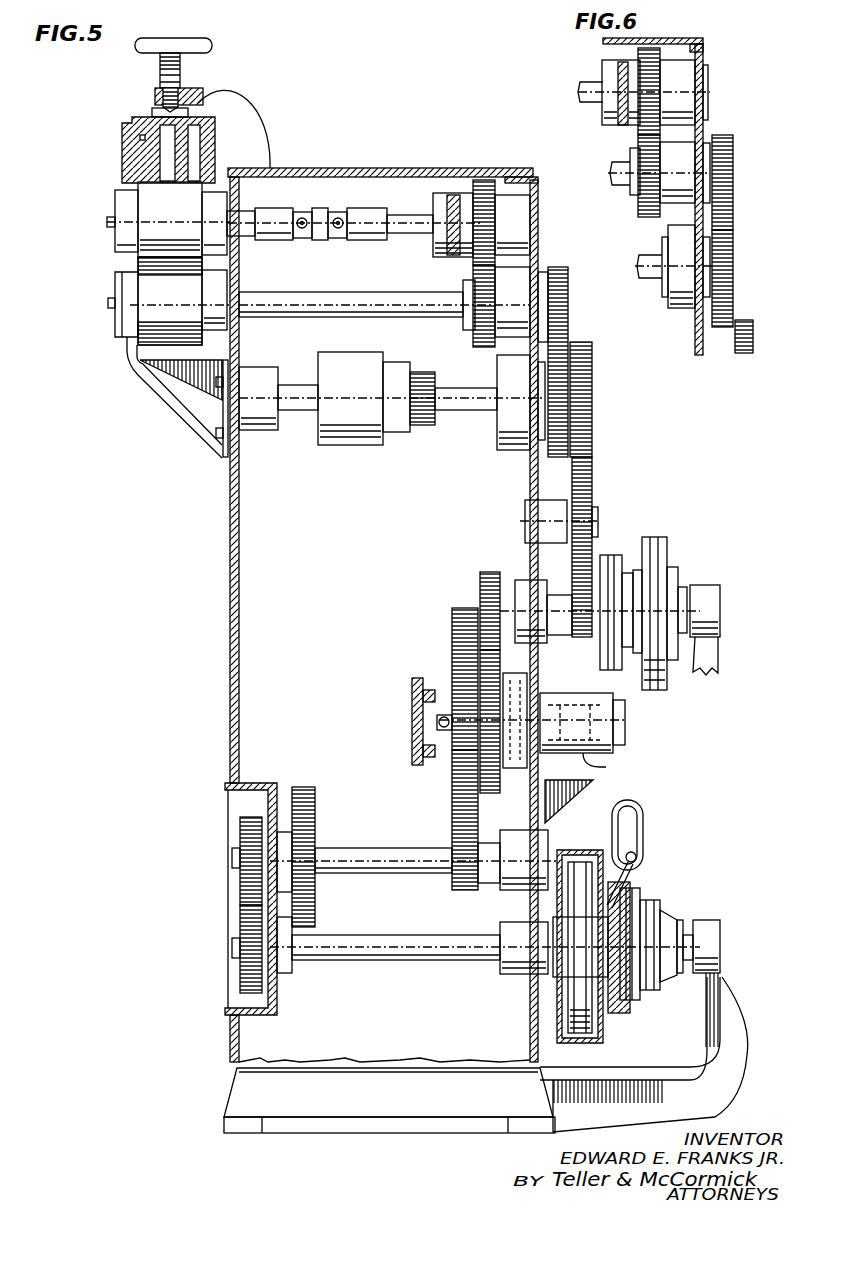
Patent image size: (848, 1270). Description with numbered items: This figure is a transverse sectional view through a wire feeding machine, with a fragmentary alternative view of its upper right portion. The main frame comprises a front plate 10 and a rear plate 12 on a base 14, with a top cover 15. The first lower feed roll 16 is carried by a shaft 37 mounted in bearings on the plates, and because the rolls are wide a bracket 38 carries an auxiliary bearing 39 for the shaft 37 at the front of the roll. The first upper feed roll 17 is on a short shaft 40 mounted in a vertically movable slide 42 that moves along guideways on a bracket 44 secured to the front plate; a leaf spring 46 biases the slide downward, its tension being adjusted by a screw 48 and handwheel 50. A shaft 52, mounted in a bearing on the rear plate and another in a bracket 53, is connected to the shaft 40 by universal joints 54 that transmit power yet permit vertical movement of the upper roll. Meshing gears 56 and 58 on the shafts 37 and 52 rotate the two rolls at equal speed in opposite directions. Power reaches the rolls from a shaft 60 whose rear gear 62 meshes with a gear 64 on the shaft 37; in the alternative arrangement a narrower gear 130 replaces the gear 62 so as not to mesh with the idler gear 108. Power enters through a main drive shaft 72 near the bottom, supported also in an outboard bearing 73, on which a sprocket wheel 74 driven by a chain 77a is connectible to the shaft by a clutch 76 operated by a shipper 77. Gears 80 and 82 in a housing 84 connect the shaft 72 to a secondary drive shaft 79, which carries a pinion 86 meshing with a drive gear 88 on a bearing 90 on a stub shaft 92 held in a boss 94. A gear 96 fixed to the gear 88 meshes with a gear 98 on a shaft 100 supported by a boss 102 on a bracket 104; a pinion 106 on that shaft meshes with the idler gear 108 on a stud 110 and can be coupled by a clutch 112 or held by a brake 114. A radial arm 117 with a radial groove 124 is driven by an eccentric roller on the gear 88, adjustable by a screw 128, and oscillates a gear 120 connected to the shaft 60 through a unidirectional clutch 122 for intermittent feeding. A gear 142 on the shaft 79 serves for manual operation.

In FIG. 5, the front plate 10 is at (230, 556).
In FIG. 5, the rear plate 12 is at (530, 483).
In FIG. 6, the rear plate 12 is at (695, 344).
In FIG. 5, the base 14 is at (229, 1098).
In FIG. 5, the top cover 15 is at (385, 168).
In FIG. 6, the top cover 15 is at (660, 38).
In FIG. 5, the first lower feed roll 16 is at (152, 318).
In FIG. 5, the first upper feed roll 17 is at (150, 192).
In FIG. 5, the shaft 37 is at (262, 300).
In FIG. 6, the shaft 37 is at (618, 165).
In FIG. 5, the bracket 38 is at (177, 393).
In FIG. 5, the auxiliary bearing 39 is at (120, 272).
In FIG. 5, the short shaft 40 is at (243, 216).
In FIG. 5, the slide 42 is at (124, 130).
In FIG. 5, the bracket 44 is at (232, 108).
In FIG. 5, the leaf spring 46 is at (158, 110).
In FIG. 5, the screw 48 is at (176, 103).
In FIG. 5, the handwheel 50 is at (212, 45).
In FIG. 5, the shaft 52 is at (398, 215).
In FIG. 6, the shaft 52 is at (600, 78).
In FIG. 5, the bracket 53 is at (433, 248).
In FIG. 6, the bracket 53 is at (602, 124).
In FIG. 5, the universal joints 54 is at (340, 240).
In FIG. 5, the gear 56 is at (473, 340).
In FIG. 6, the gear 56 is at (638, 212).
In FIG. 5, the gear 58 is at (478, 180).
In FIG. 6, the gear 58 is at (672, 45).
In FIG. 5, the shaft 60 is at (452, 388).
In FIG. 6, the shaft 60 is at (648, 265).
In FIG. 5, the gear 62 is at (593, 360).
In FIG. 5, the gear 64 is at (556, 270).
In FIG. 6, the gear 64 is at (727, 140).
In FIG. 5, the main drive shaft 72 is at (368, 940).
In FIG. 5, the outboard rear bearing 73 is at (706, 920).
In FIG. 5, the sprocket wheel 74 is at (588, 1012).
In FIG. 5, the clutch 76 is at (643, 903).
In FIG. 5, the shipper 77 is at (630, 816).
In FIG. 5, the chain 77a is at (578, 862).
In FIG. 5, the secondary drive shaft 79 is at (368, 852).
In FIG. 5, the gear 80 is at (240, 978).
In FIG. 5, the gear 82 is at (240, 825).
In FIG. 5, the housing 84 is at (270, 785).
In FIG. 5, the pinion 86 is at (458, 890).
In FIG. 5, the drive gear 88 is at (462, 608).
In FIG. 5, the bearing 90 is at (512, 678).
In FIG. 5, the stub shaft 92 is at (542, 693).
In FIG. 5, the boss 94 is at (606, 767).
In FIG. 5, the gear 96 is at (487, 793).
In FIG. 5, the gear 98 is at (488, 572).
In FIG. 5, the shaft 100 is at (557, 600).
In FIG. 5, the boss 102 is at (703, 588).
In FIG. 5, the bracket 104 is at (712, 660).
In FIG. 5, the pinion 106 is at (583, 630).
In FIG. 5, the idler gear 108 is at (592, 483).
In FIG. 6, the idler gear 108 is at (752, 328).
In FIG. 5, the stud 110 is at (598, 520).
In FIG. 5, the clutch 112 is at (660, 540).
In FIG. 5, the brake 114 is at (608, 555).
In FIG. 5, the radial arm 117 is at (412, 738).
In FIG. 5, the gear 120 is at (420, 372).
In FIG. 5, the unidirectional clutch 122 is at (330, 362).
In FIG. 5, the radial groove 124 is at (440, 708).
In FIG. 5, the screw 128 is at (442, 732).
In FIG. 6, the gear 130 is at (732, 240).
In FIG. 5, the gear 142 is at (316, 803).